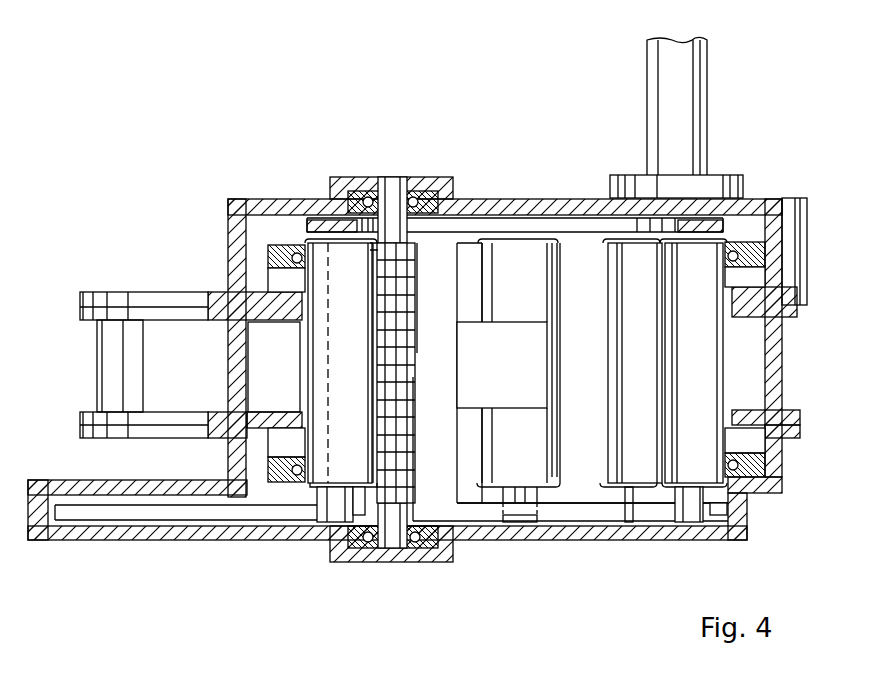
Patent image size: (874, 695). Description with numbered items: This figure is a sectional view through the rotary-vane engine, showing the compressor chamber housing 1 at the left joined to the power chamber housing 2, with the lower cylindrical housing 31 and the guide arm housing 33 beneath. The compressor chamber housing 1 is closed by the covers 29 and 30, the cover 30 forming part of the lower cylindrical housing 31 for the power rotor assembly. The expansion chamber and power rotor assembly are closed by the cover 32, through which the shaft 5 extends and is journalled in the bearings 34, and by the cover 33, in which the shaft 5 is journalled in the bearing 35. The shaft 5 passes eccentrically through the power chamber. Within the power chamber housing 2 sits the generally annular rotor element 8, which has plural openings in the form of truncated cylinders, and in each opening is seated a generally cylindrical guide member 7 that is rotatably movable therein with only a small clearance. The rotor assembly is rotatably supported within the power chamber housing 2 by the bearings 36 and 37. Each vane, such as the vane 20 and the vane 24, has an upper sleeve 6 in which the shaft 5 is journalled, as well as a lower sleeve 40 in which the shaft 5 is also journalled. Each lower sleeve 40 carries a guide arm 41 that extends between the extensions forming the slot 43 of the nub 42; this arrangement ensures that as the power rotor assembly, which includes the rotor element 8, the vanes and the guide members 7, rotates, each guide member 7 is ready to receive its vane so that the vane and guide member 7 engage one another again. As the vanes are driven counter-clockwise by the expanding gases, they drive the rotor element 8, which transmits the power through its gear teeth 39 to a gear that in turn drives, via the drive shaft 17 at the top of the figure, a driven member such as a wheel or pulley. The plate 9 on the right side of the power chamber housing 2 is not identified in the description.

The compressor chamber housing 1 is at (152, 363).
The power chamber housing 2 is at (775, 366).
The shaft 5 is at (392, 205).
The upper sleeve 6 is at (410, 256).
The guide member 7 is at (346, 292).
The rotor element 8 is at (594, 268).
The cover plate 9 is at (792, 234).
The drive shaft 17 is at (678, 128).
The vane 20 is at (255, 386).
The vane 24 is at (450, 403).
The cover 29 is at (176, 298).
The cover 30 is at (158, 432).
The lower cylindrical housing 31 is at (63, 488).
The cover 32 is at (268, 205).
The guide arm housing 33 is at (746, 504).
The bearings 34 is at (424, 197).
The bearing 35 is at (440, 549).
The bearing 36 is at (294, 251).
The bearing 37 is at (288, 472).
The gear teeth 39 is at (503, 223).
The lower sleeve 40 is at (414, 366).
The guide arm 41 is at (157, 512).
The nub 42 is at (347, 500).
The slot 43 is at (694, 512).